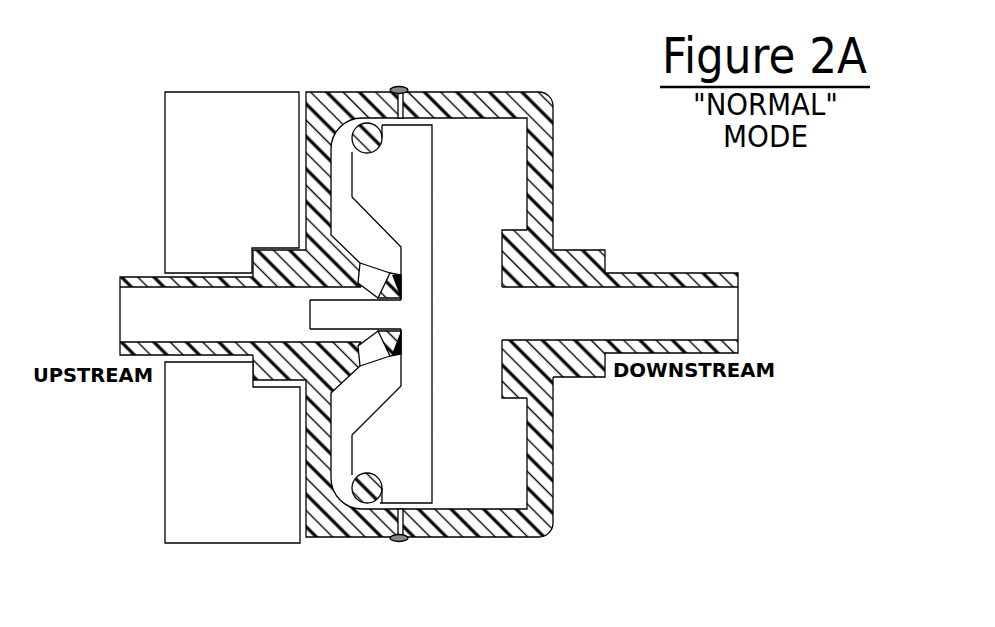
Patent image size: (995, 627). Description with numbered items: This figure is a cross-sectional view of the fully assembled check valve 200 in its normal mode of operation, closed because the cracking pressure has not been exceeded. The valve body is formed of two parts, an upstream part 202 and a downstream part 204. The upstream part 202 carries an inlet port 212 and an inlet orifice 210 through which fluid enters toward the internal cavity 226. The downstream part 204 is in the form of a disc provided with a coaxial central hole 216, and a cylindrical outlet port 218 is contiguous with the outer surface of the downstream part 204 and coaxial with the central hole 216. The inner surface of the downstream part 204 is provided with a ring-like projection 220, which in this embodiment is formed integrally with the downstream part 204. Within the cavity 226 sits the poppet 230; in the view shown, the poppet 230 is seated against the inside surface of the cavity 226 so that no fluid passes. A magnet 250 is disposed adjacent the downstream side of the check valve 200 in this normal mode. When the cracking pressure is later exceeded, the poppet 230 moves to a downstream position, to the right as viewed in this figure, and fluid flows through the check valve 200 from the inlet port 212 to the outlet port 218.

The check valve 200 is at (624, 220).
The upstream part 202 is at (297, 78).
The downstream part 204 is at (497, 82).
The inlet orifice 210 is at (280, 290).
The inlet port 212 is at (142, 275).
The central hole 216 is at (562, 288).
The outlet port 218 is at (612, 273).
The ring-like projection 220 is at (530, 251).
The cavity 226 is at (508, 464).
The poppet 230 is at (417, 198).
The magnet 250 is at (253, 135).